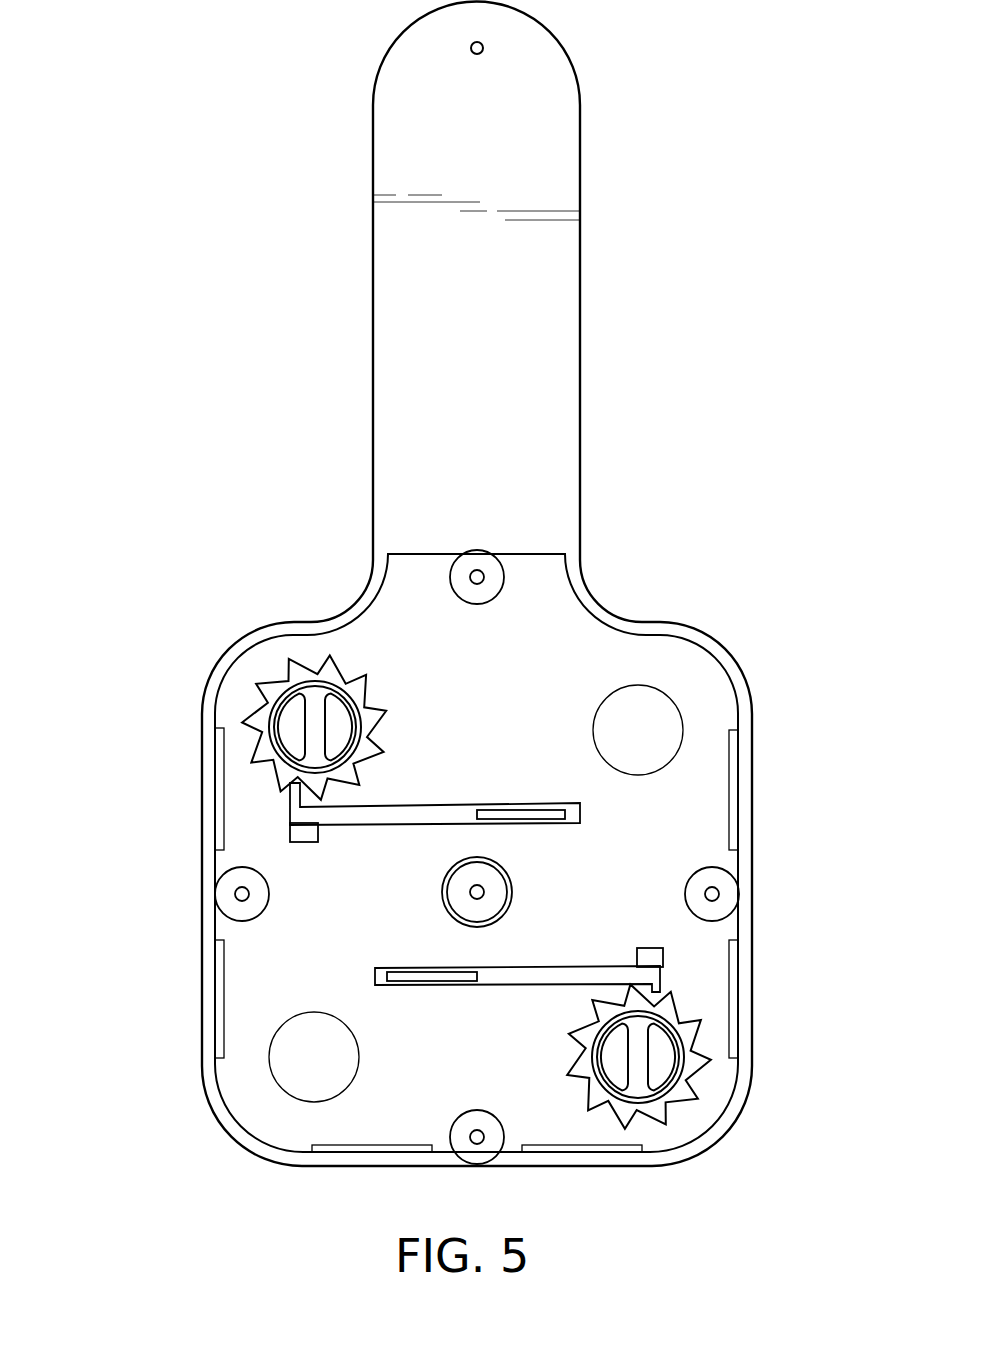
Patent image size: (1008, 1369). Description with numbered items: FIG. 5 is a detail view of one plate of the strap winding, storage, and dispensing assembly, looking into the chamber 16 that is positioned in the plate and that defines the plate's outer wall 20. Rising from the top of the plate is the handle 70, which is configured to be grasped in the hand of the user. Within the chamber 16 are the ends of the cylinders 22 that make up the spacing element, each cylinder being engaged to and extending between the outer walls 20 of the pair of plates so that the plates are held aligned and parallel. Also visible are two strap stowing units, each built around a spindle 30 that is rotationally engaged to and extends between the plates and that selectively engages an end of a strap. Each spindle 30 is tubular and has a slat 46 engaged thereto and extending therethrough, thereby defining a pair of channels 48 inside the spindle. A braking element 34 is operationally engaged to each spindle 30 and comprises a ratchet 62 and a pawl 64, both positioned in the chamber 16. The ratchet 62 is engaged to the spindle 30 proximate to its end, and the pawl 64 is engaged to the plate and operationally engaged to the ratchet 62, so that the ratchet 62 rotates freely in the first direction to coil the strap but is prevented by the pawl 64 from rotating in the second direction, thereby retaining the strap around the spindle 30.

The chamber 16 is at (622, 850).
The outer wall 20 is at (555, 630).
The cylinders 22 is at (435, 1134).
The spindle 30 is at (224, 728).
The braking element 34 is at (600, 961).
The slat 46 is at (700, 1107).
The channels 48 is at (617, 1088).
The ratchet 62 is at (230, 735).
The pawl 64 is at (275, 811).
The handle 70 is at (596, 252).